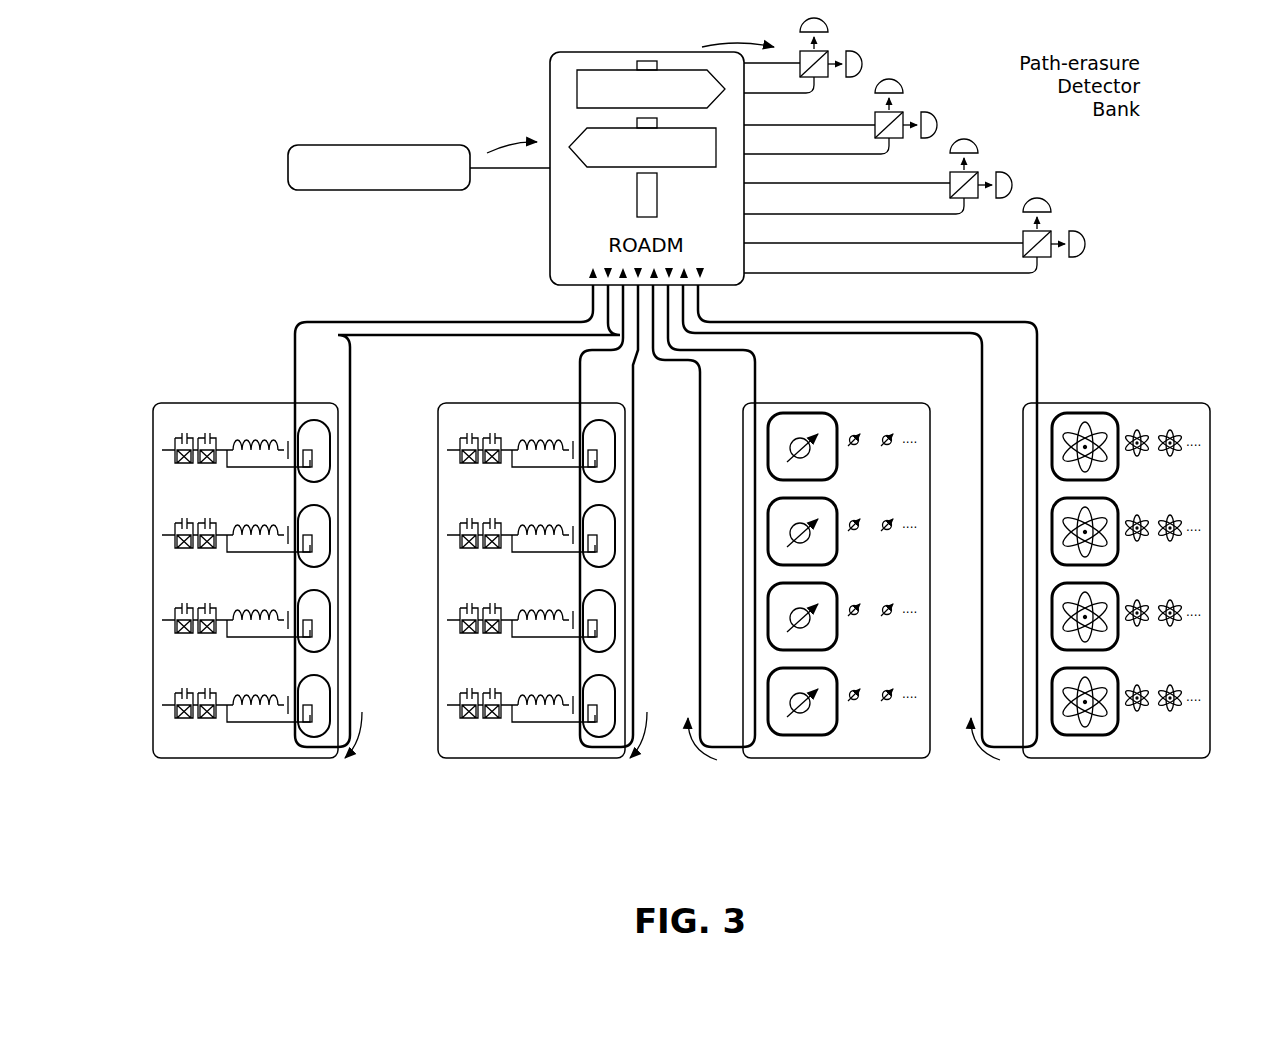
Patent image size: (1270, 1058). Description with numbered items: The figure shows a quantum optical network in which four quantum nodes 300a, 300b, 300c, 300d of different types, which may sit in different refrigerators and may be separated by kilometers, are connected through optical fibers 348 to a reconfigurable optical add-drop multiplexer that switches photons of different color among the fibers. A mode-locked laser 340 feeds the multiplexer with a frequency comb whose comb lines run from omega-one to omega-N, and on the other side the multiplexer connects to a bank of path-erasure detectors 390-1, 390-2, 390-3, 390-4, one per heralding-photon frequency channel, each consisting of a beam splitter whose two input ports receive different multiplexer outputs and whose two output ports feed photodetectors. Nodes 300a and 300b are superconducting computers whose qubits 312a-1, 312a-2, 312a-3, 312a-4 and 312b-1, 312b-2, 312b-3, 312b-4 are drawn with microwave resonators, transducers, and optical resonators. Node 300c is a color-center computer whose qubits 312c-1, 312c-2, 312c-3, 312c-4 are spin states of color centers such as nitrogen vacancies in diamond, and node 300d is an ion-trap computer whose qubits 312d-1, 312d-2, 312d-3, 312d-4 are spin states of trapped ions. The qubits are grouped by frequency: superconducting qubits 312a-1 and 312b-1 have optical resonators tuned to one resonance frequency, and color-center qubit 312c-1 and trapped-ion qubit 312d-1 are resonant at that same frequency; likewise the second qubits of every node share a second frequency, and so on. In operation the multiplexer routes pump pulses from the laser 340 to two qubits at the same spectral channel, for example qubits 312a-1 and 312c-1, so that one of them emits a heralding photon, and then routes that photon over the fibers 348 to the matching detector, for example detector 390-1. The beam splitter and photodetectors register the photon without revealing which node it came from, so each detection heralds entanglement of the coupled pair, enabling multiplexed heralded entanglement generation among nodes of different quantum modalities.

The mode-locked laser 340 is at (419, 161).
The optical fibers 348 is at (258, 320).
The path-erasure detector 390-1 is at (833, 55).
The path-erasure detector 390-2 is at (871, 116).
The path-erasure detector 390-3 is at (911, 176).
The path-erasure detector 390-4 is at (949, 235).
The node 300a is at (245, 626).
The node 300b is at (531, 626).
The node 300c is at (836, 626).
The node 300d is at (1116, 626).
The superconducting qubit 312a-1 is at (246, 458).
The superconducting qubit 312a-2 is at (246, 543).
The superconducting qubit 312a-3 is at (246, 628).
The superconducting qubit 312a-4 is at (246, 713).
The superconducting qubit 312b-1 is at (531, 458).
The superconducting qubit 312b-2 is at (531, 543).
The superconducting qubit 312b-3 is at (531, 628).
The superconducting qubit 312b-4 is at (531, 713).
The color center qubit 312c-1 is at (842, 447).
The color center qubit 312c-2 is at (842, 532).
The color center qubit 312c-3 is at (842, 617).
The color center qubit 312c-4 is at (842, 702).
The trapped ion qubit 312d-1 is at (1126, 448).
The trapped ion qubit 312d-2 is at (1126, 533).
The trapped ion qubit 312d-3 is at (1126, 618).
The trapped ion qubit 312d-4 is at (1126, 703).